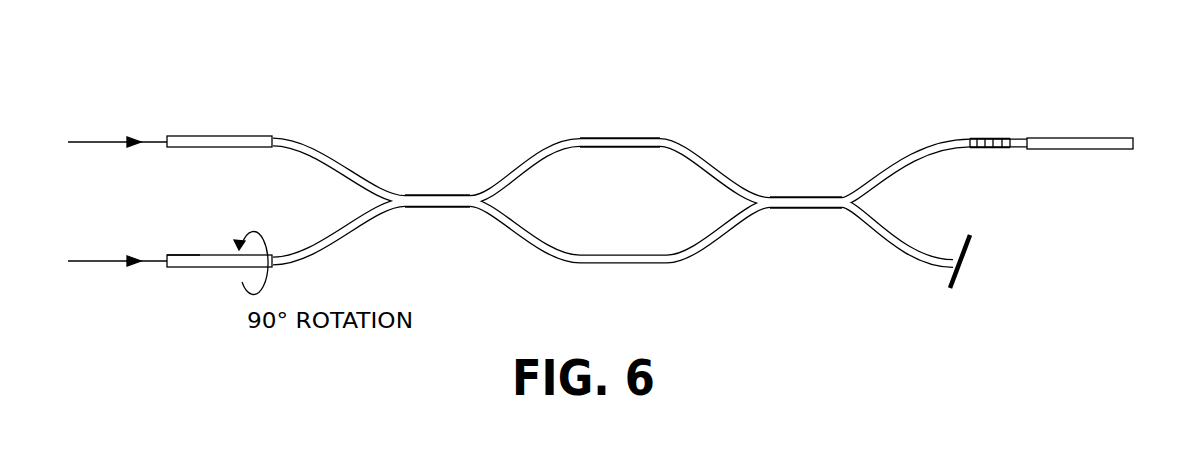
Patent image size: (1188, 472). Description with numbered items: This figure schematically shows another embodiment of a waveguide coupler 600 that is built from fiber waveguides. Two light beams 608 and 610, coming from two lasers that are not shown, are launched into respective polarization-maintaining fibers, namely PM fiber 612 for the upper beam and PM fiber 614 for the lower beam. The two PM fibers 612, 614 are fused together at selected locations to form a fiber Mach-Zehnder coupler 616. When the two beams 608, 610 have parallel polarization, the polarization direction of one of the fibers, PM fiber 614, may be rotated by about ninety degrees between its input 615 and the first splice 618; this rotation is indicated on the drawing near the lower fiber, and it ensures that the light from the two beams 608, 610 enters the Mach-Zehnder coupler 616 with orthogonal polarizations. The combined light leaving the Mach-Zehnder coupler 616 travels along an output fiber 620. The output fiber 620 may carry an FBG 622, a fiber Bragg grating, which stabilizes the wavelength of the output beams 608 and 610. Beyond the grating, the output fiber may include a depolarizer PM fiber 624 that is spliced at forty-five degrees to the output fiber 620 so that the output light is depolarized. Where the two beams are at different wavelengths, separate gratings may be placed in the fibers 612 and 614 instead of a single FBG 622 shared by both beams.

The waveguide coupler 600 is at (637, 92).
The light beam 608 is at (105, 140).
The light beam 610 is at (105, 262).
The PM fiber 612 is at (197, 128).
The PM fiber 614 is at (197, 275).
The input 615 is at (167, 255).
The fiber Mach-Zehnder coupler 616 is at (555, 145).
The first splice 618 is at (440, 193).
The output fiber 620 is at (910, 155).
The FBG 622 is at (995, 138).
The depolarizer PM fiber 624 is at (1083, 137).